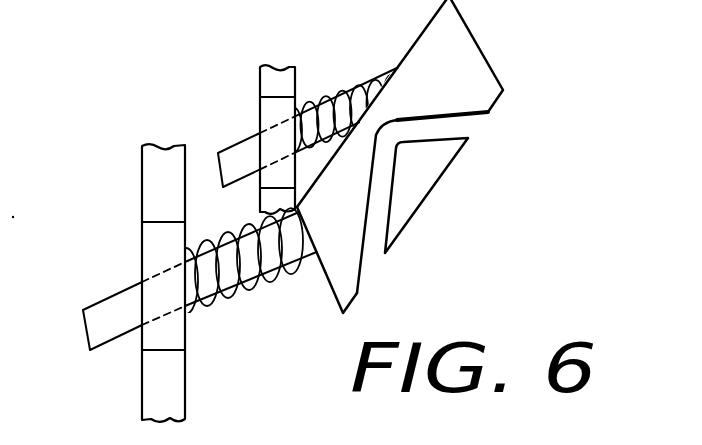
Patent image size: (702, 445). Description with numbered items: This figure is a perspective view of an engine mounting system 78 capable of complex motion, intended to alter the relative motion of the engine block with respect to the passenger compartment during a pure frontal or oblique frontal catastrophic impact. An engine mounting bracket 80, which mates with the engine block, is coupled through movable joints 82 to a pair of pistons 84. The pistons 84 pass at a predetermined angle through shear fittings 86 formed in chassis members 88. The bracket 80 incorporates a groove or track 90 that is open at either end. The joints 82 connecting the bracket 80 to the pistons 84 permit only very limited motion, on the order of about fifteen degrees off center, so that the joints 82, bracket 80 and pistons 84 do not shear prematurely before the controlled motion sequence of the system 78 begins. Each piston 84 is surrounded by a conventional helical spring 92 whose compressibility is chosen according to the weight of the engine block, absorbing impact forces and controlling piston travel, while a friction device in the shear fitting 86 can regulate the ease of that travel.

The engine mounting system 78 is at (178, 95).
The engine mounting bracket 80 is at (472, 52).
The movable joints 82 is at (311, 270).
The pistons 84 is at (110, 322).
The shear fittings 86 is at (160, 253).
The chassis members 88 is at (157, 192).
The groove or track 90 is at (373, 243).
The helical springs 92 is at (340, 88).